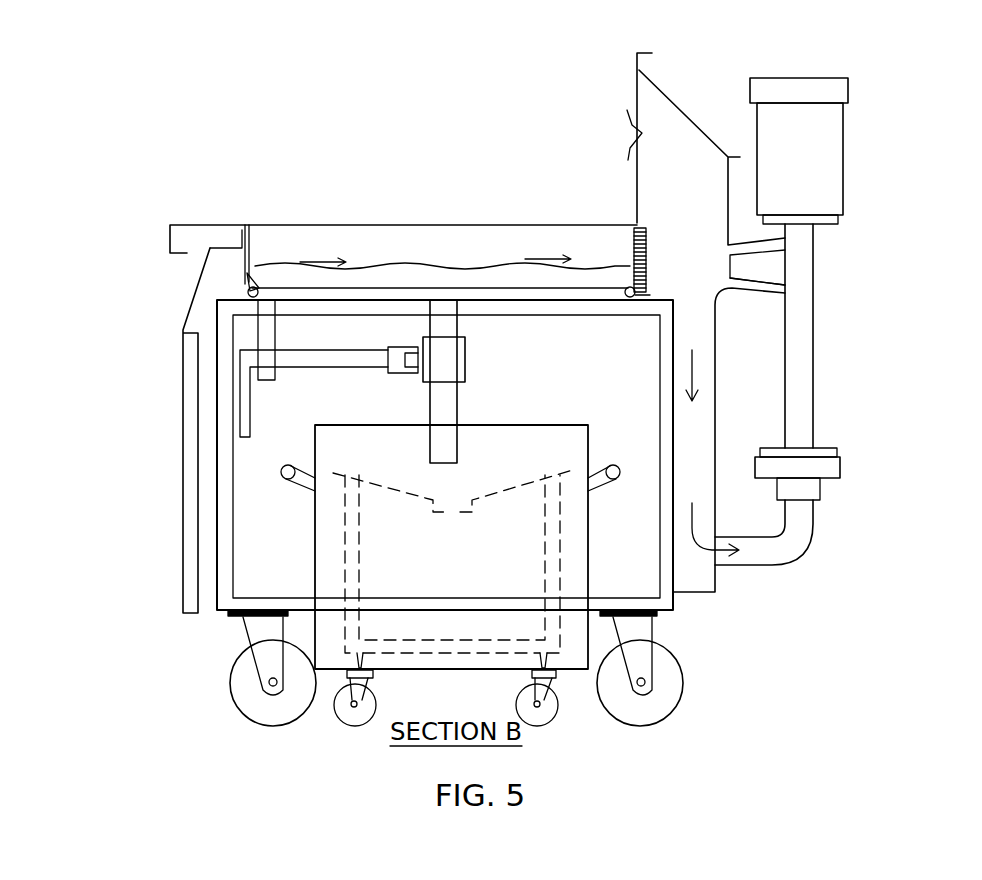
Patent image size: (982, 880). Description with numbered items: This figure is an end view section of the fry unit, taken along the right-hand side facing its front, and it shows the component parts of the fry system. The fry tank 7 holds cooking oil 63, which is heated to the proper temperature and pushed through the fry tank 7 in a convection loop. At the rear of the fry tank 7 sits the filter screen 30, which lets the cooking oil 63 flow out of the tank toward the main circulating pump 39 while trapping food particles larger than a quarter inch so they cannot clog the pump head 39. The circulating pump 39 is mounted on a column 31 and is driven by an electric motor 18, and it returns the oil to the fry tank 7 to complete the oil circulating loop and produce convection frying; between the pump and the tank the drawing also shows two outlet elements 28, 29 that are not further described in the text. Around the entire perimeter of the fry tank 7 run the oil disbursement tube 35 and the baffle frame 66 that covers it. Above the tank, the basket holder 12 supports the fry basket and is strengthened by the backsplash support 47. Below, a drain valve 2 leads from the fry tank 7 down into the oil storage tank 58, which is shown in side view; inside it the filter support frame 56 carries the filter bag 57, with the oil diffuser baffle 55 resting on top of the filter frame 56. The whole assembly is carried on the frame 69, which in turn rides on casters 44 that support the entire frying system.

The drain valve 2 is at (432, 370).
The fry tank 7 is at (245, 262).
The basket holder 12 is at (630, 118).
The electric motor 18 is at (800, 163).
The upper outlet 28 is at (785, 245).
The lower outlet 29 is at (785, 289).
The filter screen 30 is at (634, 225).
The column 31 is at (813, 382).
The oil disbursement tube 35 is at (248, 295).
The circulating pump 39 is at (842, 467).
The casters 44 is at (682, 678).
The backsplash support 47 is at (687, 112).
The oil diffuser baffle 55 is at (390, 488).
The filter support frame 56 is at (560, 530).
The filter bag 57 is at (547, 560).
The oil storage tank 58 is at (315, 515).
The cooking oil 63 is at (480, 267).
The baffle frame 66 is at (252, 285).
The frame 69 is at (215, 502).